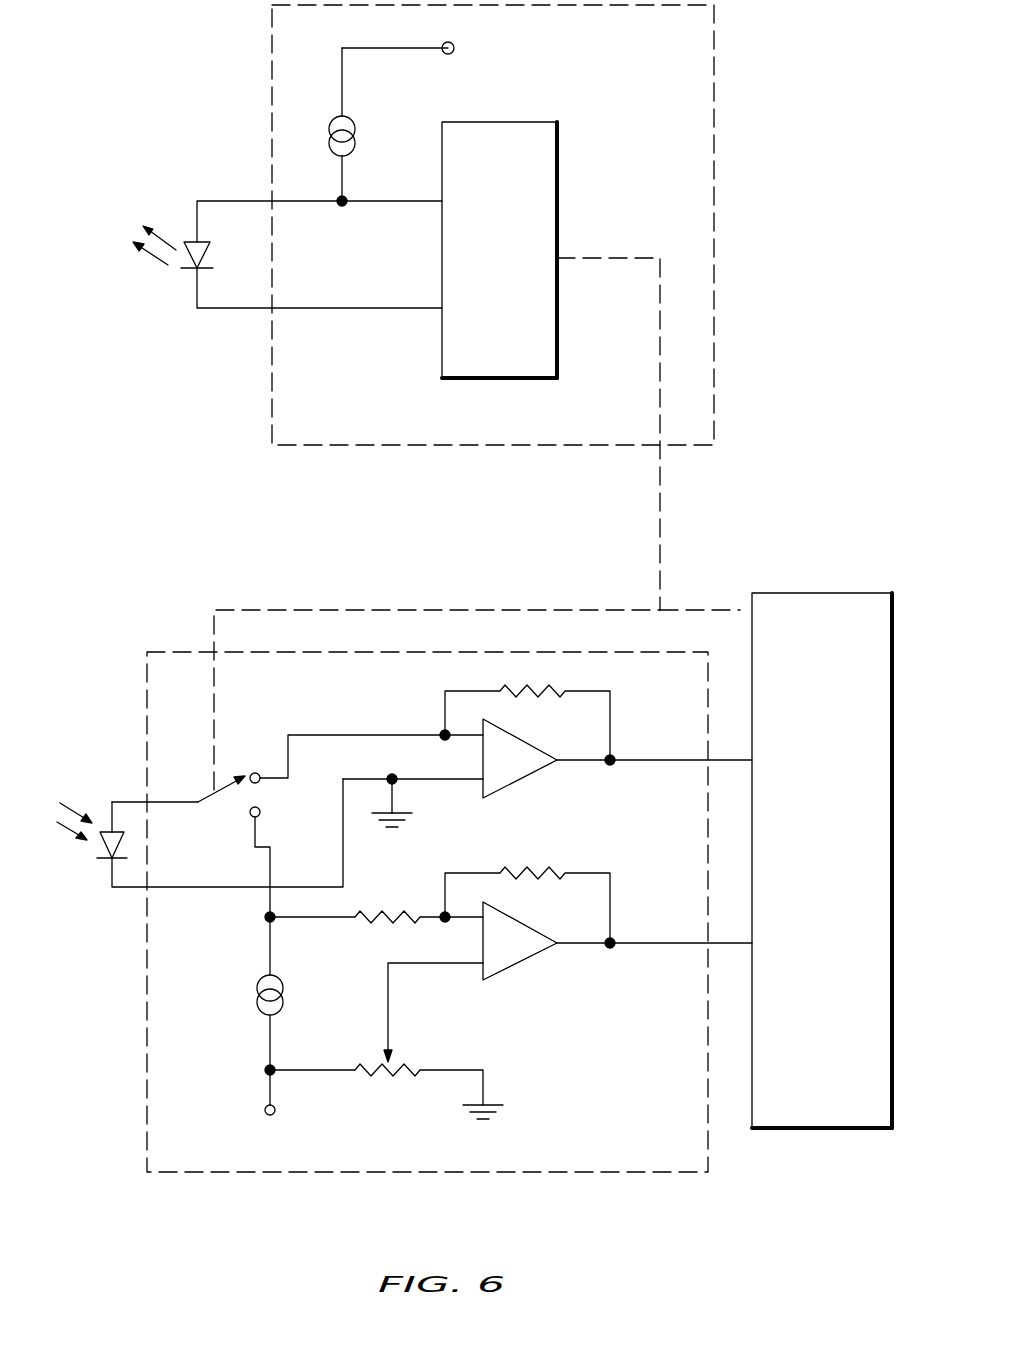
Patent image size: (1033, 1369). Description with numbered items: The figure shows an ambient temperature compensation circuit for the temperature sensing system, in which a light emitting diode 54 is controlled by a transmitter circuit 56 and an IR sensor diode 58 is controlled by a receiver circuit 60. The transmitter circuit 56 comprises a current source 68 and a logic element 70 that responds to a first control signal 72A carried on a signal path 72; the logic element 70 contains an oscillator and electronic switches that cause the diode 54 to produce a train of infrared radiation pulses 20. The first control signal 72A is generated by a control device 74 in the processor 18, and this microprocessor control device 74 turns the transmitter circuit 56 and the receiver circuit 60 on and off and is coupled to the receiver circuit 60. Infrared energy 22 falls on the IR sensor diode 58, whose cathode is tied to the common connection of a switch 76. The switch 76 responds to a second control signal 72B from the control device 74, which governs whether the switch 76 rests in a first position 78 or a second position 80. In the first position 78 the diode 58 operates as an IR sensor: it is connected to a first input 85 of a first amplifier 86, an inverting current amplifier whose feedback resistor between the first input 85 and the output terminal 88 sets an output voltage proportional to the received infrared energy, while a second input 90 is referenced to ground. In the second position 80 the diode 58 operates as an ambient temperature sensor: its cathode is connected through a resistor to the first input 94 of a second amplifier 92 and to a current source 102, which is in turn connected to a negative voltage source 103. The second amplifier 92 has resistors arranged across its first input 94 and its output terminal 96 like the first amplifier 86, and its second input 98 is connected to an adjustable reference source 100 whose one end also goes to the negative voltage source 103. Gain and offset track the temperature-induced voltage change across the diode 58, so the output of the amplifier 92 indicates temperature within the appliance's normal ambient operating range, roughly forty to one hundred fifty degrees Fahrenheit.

The processor 18 is at (820, 35).
The infrared radiation pulses 20 is at (168, 232).
The received light 22 is at (72, 800).
The light emitting diode 54 is at (210, 246).
The transmitter circuit 56 is at (712, 100).
The IR sensor diode 58 is at (112, 875).
The receiver circuit 60 is at (275, 652).
The current source 68 is at (354, 134).
The logic element 70 is at (557, 172).
The signal path 72 is at (732, 612).
The first control signal 72A is at (600, 258).
The second control signal 72B is at (213, 718).
The control device 74 is at (840, 593).
The switch 76 is at (205, 810).
The first position 78 is at (258, 773).
The second position 80 is at (262, 815).
The first input 85 is at (462, 738).
The first amplifier 86 is at (530, 742).
The output terminal 88 is at (655, 760).
The second input 90 is at (452, 782).
The second amplifier 92 is at (530, 925).
The first input 94 is at (463, 920).
The output terminal 96 is at (655, 943).
The second input 98 is at (450, 965).
The adjustable reference source 100 is at (398, 1080).
The current source 102 is at (258, 1008).
The negative voltage source 103 is at (262, 1115).